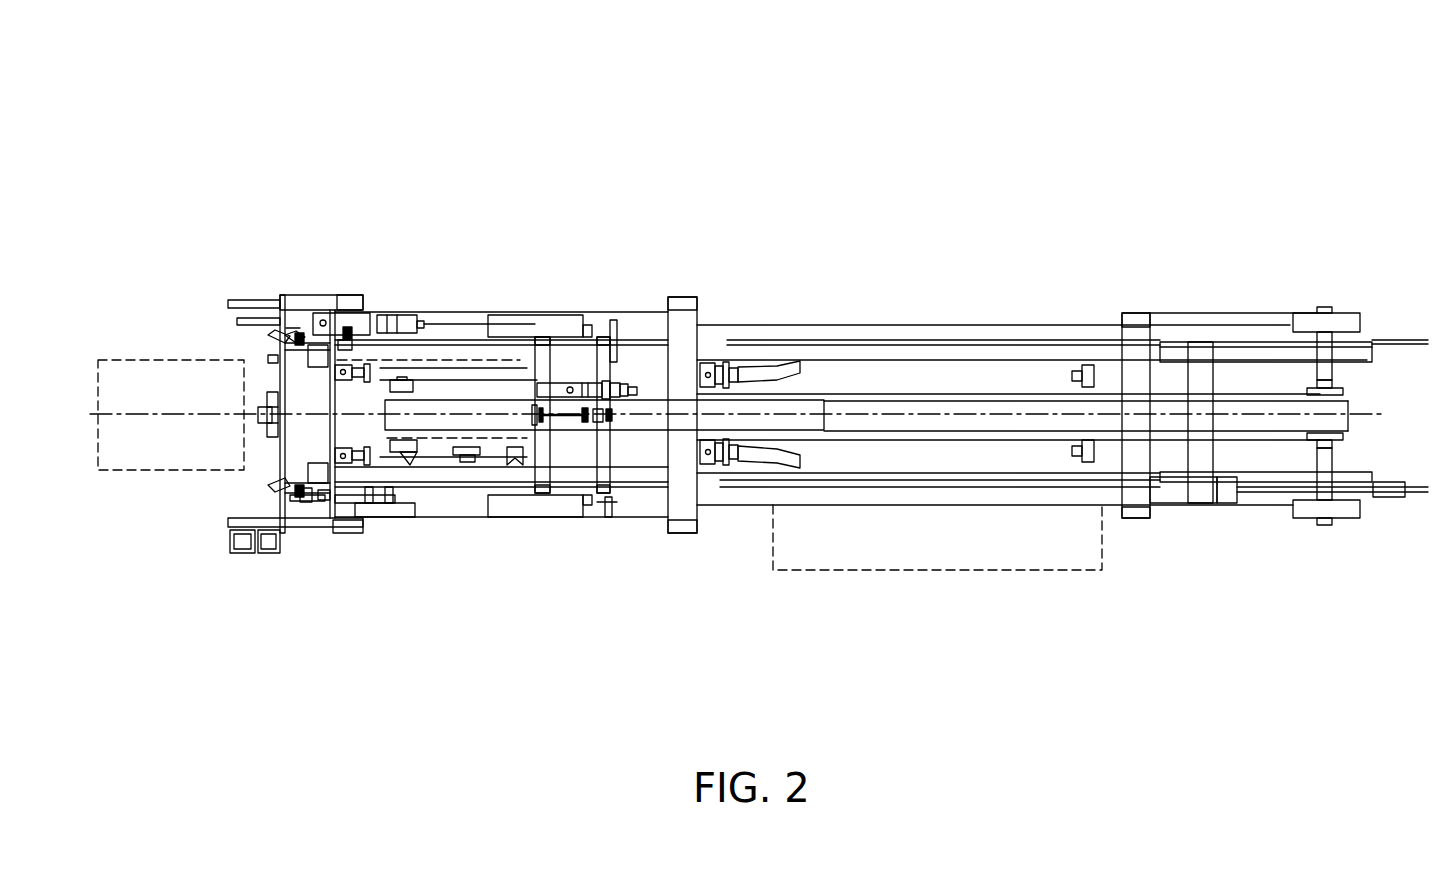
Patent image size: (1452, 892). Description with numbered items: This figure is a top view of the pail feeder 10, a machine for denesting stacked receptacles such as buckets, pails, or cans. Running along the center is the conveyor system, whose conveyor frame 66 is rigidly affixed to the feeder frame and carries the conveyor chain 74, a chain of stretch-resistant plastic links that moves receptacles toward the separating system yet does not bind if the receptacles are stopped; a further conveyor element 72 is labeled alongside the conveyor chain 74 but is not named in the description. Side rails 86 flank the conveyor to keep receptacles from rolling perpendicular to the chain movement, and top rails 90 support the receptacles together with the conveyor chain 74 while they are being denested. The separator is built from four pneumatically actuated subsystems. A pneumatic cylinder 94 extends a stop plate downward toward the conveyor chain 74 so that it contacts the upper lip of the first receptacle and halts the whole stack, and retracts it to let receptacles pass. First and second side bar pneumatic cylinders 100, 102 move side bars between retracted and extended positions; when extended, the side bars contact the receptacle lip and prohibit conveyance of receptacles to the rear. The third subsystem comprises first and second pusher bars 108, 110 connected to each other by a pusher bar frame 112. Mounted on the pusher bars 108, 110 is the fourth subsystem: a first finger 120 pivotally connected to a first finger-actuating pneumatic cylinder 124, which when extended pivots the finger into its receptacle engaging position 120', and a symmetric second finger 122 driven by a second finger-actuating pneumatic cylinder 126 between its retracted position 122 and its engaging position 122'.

The feeder 10 is at (1005, 113).
The conveyor frame 66 is at (1260, 434).
The shaft 72 is at (1347, 392).
The conveyor chain 74 is at (1348, 425).
The side rails 86 is at (922, 473).
The top rails 90 is at (780, 368).
The pneumatic cylinder 94 is at (268, 392).
The first side bar pneumatic cylinder 100 is at (312, 472).
The second side bar pneumatic cylinder 102 is at (270, 358).
The first pusher bar 108 is at (458, 488).
The second pusher bar 110 is at (485, 343).
The pusher bar frame 112 is at (541, 478).
The first finger 120 is at (225, 563).
The receptacle engaging position of first finger 120' is at (223, 508).
The second finger 122 is at (245, 278).
The engaging position of second finger 122' is at (216, 295).
The first finger-actuating pneumatic cylinder 124 is at (313, 498).
The second finger-actuating pneumatic cylinder 126 is at (349, 330).